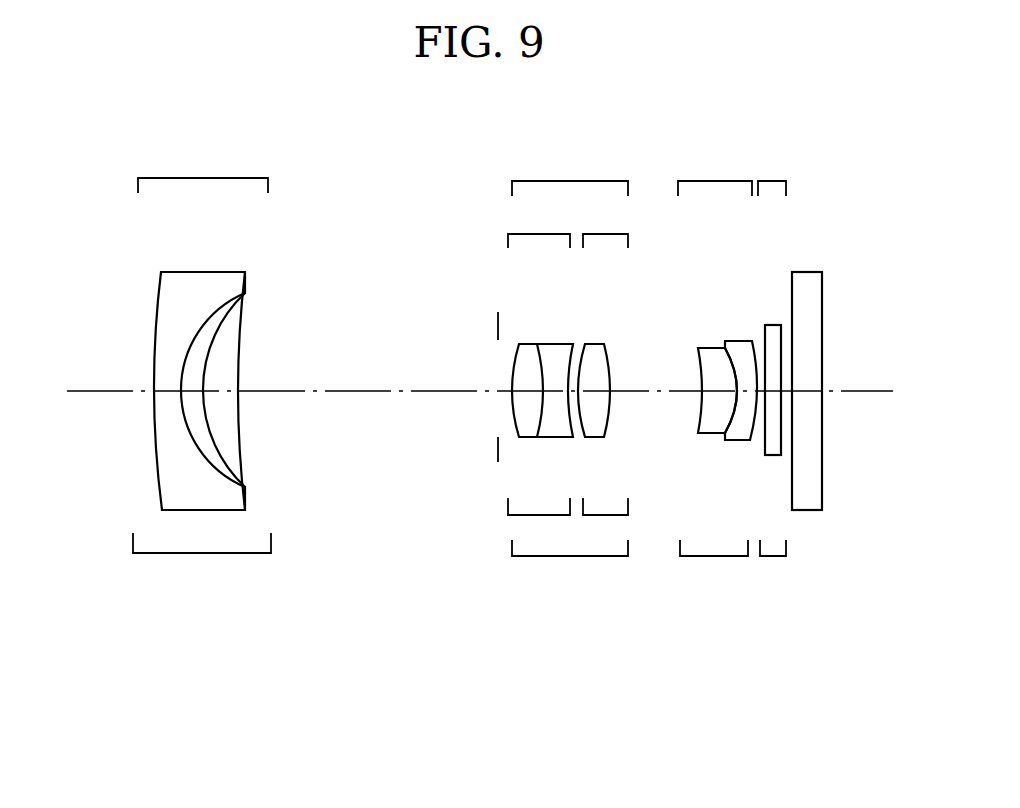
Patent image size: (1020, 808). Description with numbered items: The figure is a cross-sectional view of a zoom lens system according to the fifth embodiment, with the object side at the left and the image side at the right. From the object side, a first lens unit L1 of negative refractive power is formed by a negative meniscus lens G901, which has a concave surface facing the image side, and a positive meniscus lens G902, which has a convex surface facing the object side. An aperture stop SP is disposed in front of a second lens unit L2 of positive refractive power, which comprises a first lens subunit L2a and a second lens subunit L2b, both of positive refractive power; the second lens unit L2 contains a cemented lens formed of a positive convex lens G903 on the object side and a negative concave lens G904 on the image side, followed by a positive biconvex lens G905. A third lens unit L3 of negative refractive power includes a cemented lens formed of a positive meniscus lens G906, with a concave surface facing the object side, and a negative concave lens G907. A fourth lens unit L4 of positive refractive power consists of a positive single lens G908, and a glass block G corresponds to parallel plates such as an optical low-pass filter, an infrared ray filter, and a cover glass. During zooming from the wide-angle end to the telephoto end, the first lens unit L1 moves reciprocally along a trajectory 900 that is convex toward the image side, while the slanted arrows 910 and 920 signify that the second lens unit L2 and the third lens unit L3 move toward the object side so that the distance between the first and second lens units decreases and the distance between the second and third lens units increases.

The first lens unit L1 is at (203, 169).
The second lens unit L2 is at (570, 351).
The first lens subunit L2a is at (539, 358).
The second lens subunit L2b is at (607, 358).
The third lens unit L3 is at (715, 351).
The fourth lens unit L4 is at (774, 351).
The aperture stop SP is at (498, 322).
The glass block G is at (812, 272).
The negative meniscus lens G901 is at (181, 510).
The positive meniscus lens G902 is at (246, 488).
The positive convex lens G903 is at (524, 438).
The negative concave lens G904 is at (553, 438).
The positive biconvex lens G905 is at (588, 438).
The positive meniscus lens G906 is at (715, 435).
The negative concave lens G907 is at (735, 440).
The positive single lens G908 is at (772, 455).
The trajectory of the first lens unit 900 is at (200, 553).
The motion arrow of the second lens unit 910 is at (565, 556).
The motion arrow of the third lens unit 920 is at (722, 556).